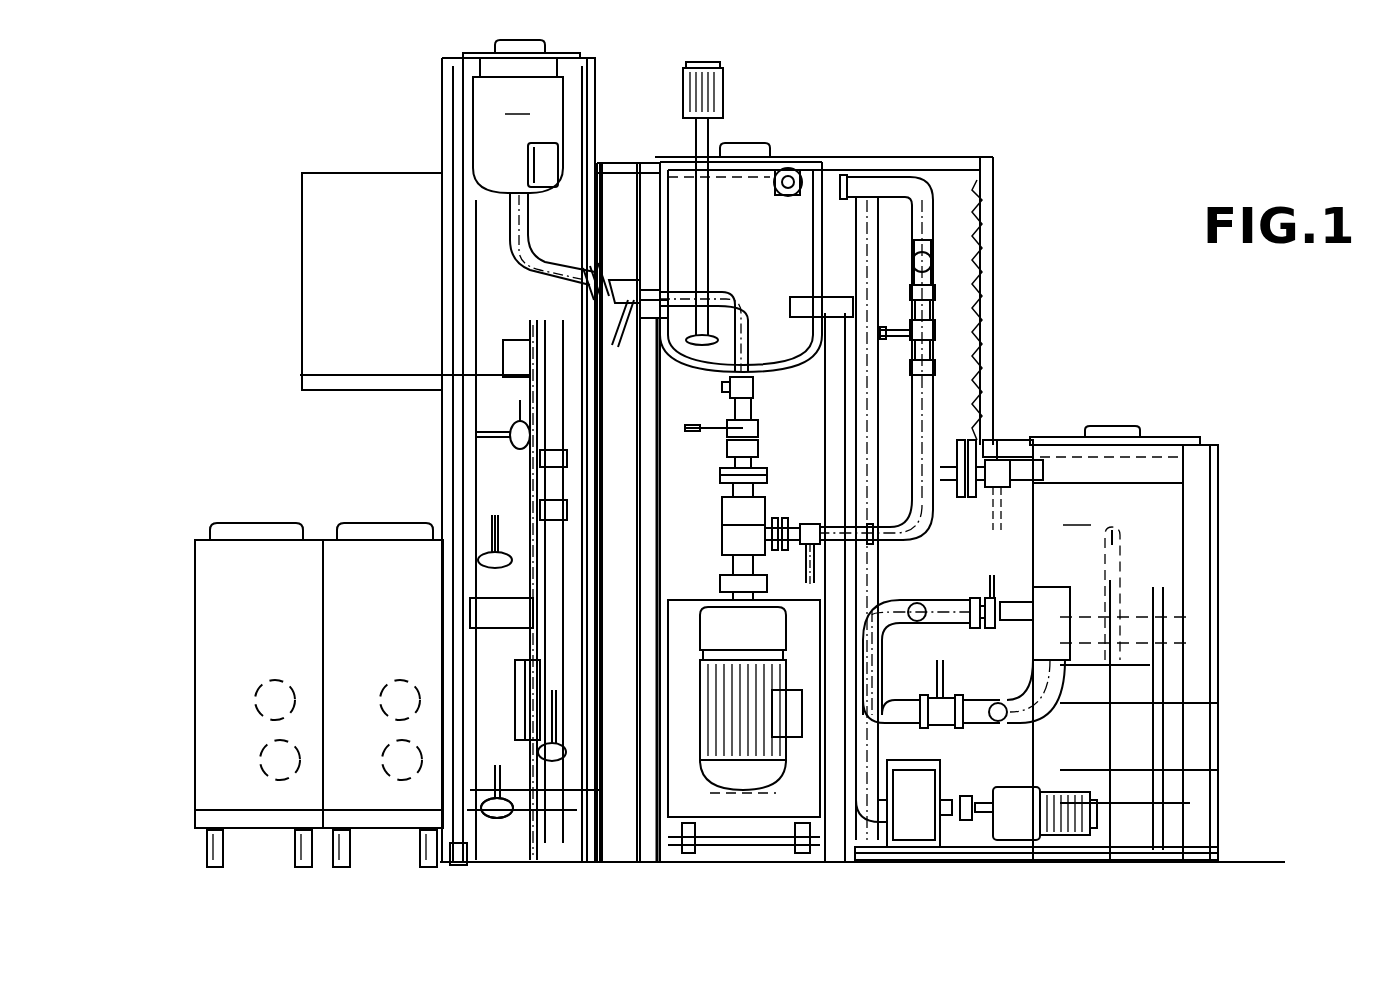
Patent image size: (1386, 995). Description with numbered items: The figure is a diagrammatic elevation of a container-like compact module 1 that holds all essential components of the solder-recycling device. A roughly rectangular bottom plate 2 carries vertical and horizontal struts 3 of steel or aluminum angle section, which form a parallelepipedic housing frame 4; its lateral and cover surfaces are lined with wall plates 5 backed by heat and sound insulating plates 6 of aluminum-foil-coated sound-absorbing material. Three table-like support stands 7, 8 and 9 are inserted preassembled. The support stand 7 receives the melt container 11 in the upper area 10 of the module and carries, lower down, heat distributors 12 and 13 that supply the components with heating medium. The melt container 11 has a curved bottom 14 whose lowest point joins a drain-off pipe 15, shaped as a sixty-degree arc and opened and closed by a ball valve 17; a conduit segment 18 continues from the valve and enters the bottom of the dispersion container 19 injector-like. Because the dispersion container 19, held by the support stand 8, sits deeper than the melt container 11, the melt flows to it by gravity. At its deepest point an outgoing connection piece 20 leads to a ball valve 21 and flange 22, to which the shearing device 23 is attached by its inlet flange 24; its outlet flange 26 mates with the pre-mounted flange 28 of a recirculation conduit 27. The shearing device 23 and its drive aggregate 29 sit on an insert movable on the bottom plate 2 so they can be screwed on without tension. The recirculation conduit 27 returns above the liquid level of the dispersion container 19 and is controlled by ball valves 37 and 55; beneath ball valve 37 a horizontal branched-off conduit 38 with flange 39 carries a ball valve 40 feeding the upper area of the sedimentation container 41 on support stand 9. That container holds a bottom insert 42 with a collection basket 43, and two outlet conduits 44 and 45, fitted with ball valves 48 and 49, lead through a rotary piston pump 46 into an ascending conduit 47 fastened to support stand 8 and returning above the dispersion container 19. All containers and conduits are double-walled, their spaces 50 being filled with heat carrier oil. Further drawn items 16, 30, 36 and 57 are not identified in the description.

The compact module 1 is at (1222, 860).
The bottom plate 2 is at (977, 863).
The struts 3 is at (993, 190).
The housing frame 4 is at (442, 88).
The wall plates 5 is at (985, 237).
The heat and sound insulating plates 6 is at (985, 300).
The support stand 7 is at (508, 375).
The support stand 8 is at (640, 335).
The support stand 9 is at (1173, 688).
The upper area 10 is at (463, 138).
The melt container 11 is at (518, 125).
The heat distributor 12 is at (518, 774).
The heat distributor 13 is at (510, 483).
The curved bottom 14 is at (495, 183).
The drain-off pipe 15 is at (512, 243).
The flange coupling 16 is at (600, 266).
The ball valve 17 is at (634, 280).
The conduit segment 18 is at (677, 297).
The dispersion container 19 is at (975, 160).
The connection piece 20 is at (748, 385).
The ball valve 21 is at (758, 436).
The flange 22 is at (757, 480).
The shearing device 23 is at (733, 508).
The inlet flange 24 is at (747, 492).
The outlet flange 26 is at (757, 533).
The recirculation conduit 27 is at (890, 183).
The flange 28 is at (757, 557).
The drive aggregate 29 is at (713, 722).
The pump housing 30 is at (740, 798).
The lid fitting 36 is at (753, 187).
The ball valve 37 is at (925, 333).
The branched-off conduit 38 is at (960, 445).
The flange 39 is at (985, 460).
The ball valve 40 is at (1013, 440).
The sedimentation container 41 is at (1124, 643).
The insert 42 is at (1120, 575).
The collection basket 43 is at (1130, 633).
The outlet conduit 44 is at (905, 603).
The outlet conduit 45 is at (1055, 720).
The rotary piston pump 46 is at (1020, 827).
The ascending conduit 47 is at (885, 580).
The ball valve 48 is at (995, 623).
The ball valve 49 is at (943, 730).
The spaces 50 is at (663, 222).
The ball valve 55 is at (815, 518).
The tank pipe 57 is at (703, 287).